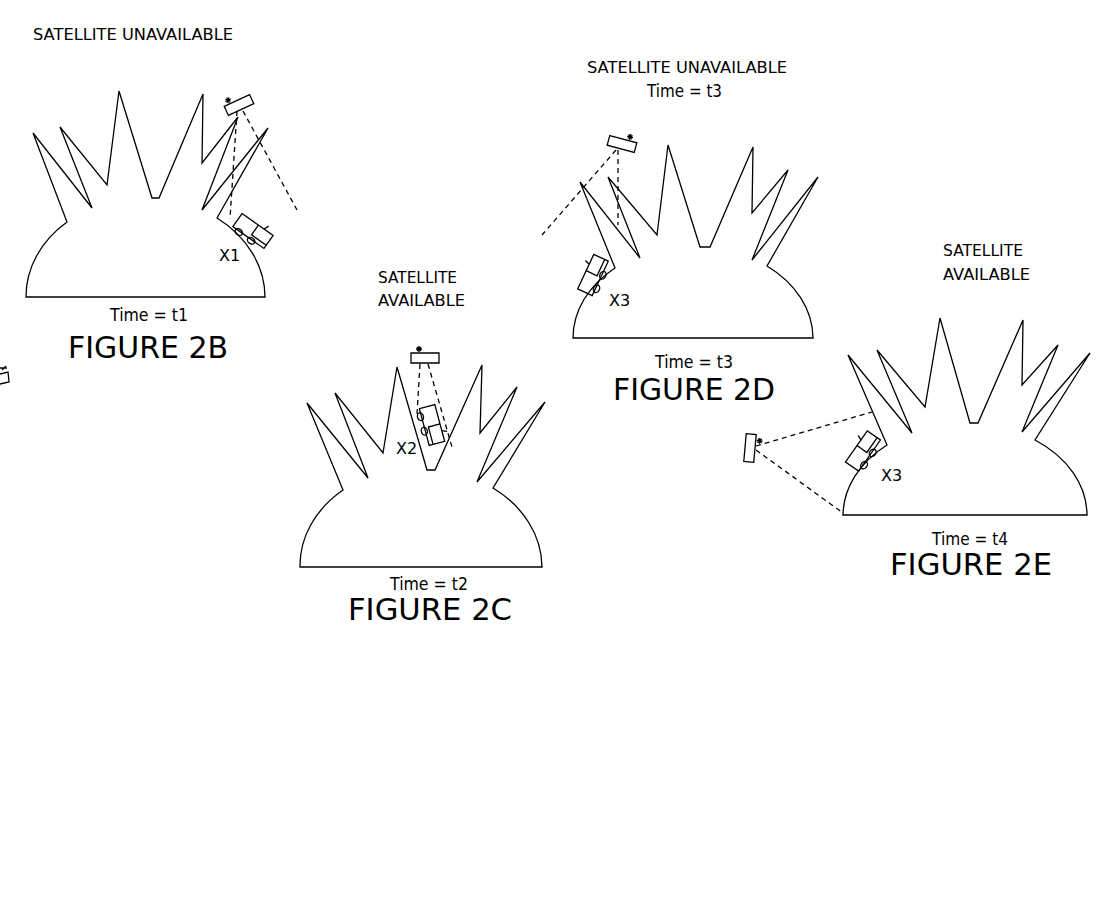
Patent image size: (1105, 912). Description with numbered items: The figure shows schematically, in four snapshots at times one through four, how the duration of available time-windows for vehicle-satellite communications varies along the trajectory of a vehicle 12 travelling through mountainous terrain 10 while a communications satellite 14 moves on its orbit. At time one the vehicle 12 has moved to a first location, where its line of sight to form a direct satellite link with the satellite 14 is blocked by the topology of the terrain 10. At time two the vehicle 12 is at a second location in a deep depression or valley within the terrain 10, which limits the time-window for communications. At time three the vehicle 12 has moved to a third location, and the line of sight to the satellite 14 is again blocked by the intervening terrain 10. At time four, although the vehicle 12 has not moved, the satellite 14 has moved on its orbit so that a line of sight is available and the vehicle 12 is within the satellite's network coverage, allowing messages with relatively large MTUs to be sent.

In FIG. 2B, the urban environment / obstruction with satellite-blocking structures 10 is at (158, 268).
In FIG. 2C, the urban environment / obstruction with satellite-blocking structures 10 is at (433, 538).
In FIG. 2D, the urban environment / obstruction with satellite-blocking structures 10 is at (706, 317).
In FIG. 2E, the urban environment / obstruction with satellite-blocking structures 10 is at (976, 492).
In FIG. 2B, the vehicle 12 is at (270, 242).
In FIG. 2C, the vehicle 12 is at (440, 427).
In FIG. 2D, the vehicle 12 is at (580, 272).
In FIG. 2E, the vehicle 12 is at (851, 445).
In FIG. 2B, the communications satellite 14 is at (250, 97).
In FIG. 2C, the communications satellite 14 is at (433, 351).
In FIG. 2D, the communications satellite 14 is at (608, 140).
In FIG. 2E, the communications satellite 14 is at (746, 463).